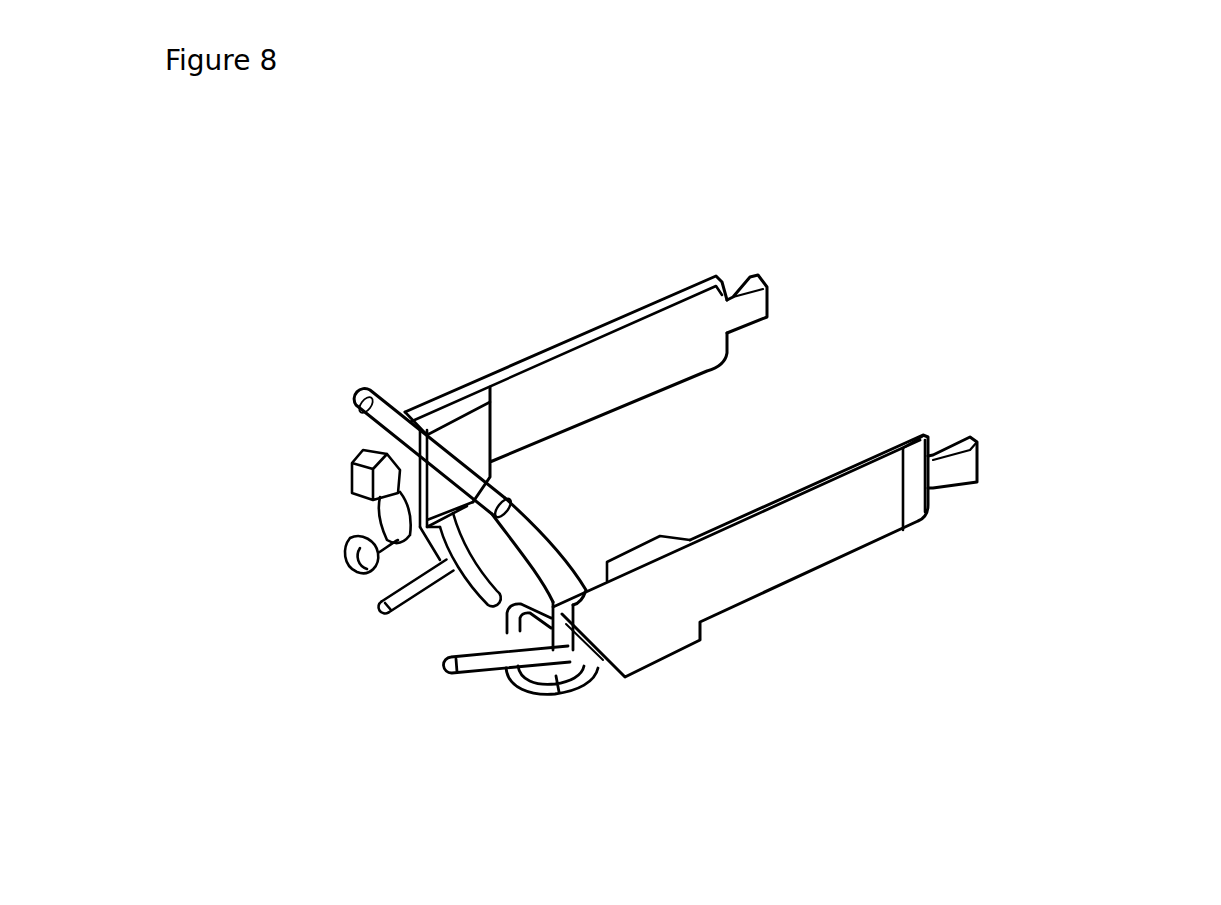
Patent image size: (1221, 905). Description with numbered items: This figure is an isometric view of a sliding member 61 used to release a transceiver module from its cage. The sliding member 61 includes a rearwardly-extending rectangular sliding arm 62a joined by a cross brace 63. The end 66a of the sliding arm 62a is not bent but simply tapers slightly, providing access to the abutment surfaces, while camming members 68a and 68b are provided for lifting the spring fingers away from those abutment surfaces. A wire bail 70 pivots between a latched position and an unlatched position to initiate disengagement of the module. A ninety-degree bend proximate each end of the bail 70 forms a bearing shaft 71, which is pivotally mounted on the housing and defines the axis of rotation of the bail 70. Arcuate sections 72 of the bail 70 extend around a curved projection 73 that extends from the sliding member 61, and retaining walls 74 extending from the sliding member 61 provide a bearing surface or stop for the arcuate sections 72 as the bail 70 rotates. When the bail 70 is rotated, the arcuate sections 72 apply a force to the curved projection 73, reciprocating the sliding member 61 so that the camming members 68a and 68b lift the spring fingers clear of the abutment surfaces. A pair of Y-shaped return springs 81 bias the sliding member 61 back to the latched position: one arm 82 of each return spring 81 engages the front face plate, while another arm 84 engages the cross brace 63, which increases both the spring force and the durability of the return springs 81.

The sliding member 61 is at (600, 333).
The sliding arm 62a is at (798, 553).
The cross brace 63 is at (498, 556).
The end of sliding arm 66a is at (910, 463).
The camming member 68a is at (960, 477).
The camming member 68b is at (762, 303).
The wire bail 70 is at (373, 417).
The bearing shaft 71 is at (367, 570).
The arcuate section 72 is at (395, 517).
The curved projection 73 is at (377, 498).
The retaining wall 74 is at (463, 430).
The return spring 81 is at (372, 602).
The arm of return spring 82 is at (390, 590).
The arm of return spring 84 is at (462, 595).